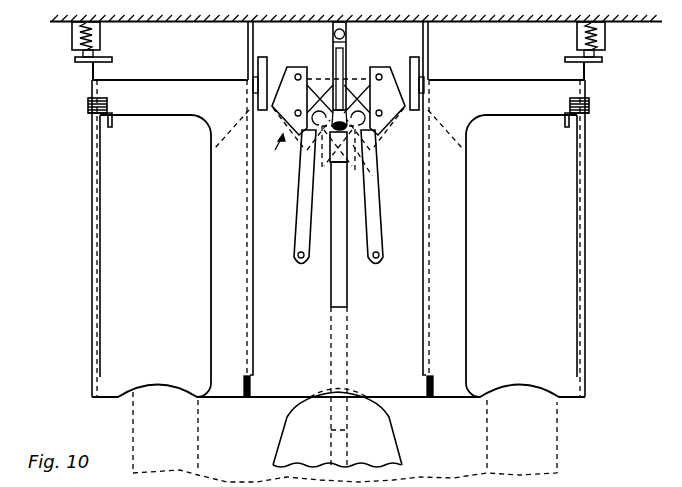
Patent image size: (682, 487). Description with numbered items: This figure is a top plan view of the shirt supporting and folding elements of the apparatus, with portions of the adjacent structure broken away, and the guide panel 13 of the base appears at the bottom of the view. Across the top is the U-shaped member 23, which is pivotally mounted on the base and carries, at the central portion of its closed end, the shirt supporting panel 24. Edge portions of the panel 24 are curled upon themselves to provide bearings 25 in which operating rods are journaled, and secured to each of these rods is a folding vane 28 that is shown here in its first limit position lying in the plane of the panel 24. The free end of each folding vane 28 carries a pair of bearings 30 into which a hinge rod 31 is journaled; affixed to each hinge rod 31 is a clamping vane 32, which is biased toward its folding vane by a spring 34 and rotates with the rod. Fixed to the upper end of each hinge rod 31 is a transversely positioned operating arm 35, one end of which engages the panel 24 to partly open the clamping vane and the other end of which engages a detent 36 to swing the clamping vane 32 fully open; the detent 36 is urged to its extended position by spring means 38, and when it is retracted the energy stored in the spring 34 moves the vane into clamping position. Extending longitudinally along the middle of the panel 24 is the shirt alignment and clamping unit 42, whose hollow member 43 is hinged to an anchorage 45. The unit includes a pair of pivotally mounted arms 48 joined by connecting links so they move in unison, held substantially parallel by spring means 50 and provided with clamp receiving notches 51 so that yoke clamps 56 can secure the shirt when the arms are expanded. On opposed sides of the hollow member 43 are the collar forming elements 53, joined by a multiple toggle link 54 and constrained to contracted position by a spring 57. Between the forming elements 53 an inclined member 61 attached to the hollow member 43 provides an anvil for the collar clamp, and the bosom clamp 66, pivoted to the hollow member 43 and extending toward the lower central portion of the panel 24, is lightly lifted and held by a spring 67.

The guide panel 13 is at (288, 436).
The U-shaped member 23 is at (477, 24).
The shirt supporting panel 24 is at (410, 257).
The bearings 25 is at (253, 384).
The folding vane 28 is at (230, 307).
The bearings 30 is at (92, 93).
The hinge rod 31 is at (93, 74).
The clamping vane 32 is at (158, 227).
The spring 34 is at (88, 111).
The operating arm 35 is at (112, 59).
The detent 36 is at (83, 54).
The spring means 38 is at (72, 36).
The shirt alignment and clamping unit 42 is at (271, 152).
The hollow member 43 is at (346, 47).
The anchorage 45 is at (345, 30).
The pivotally mounted arms 48 is at (302, 228).
The spring means 50 is at (354, 151).
The clamp receiving notches 51 is at (378, 178).
The forming elements 53 is at (282, 81).
The multiple toggle link 54 is at (321, 80).
The yoke clamps 56 is at (258, 75).
The spring 57 is at (362, 126).
The inclined member 61 is at (331, 153).
The bosom clamp 66 is at (331, 278).
The spring 67 is at (343, 59).